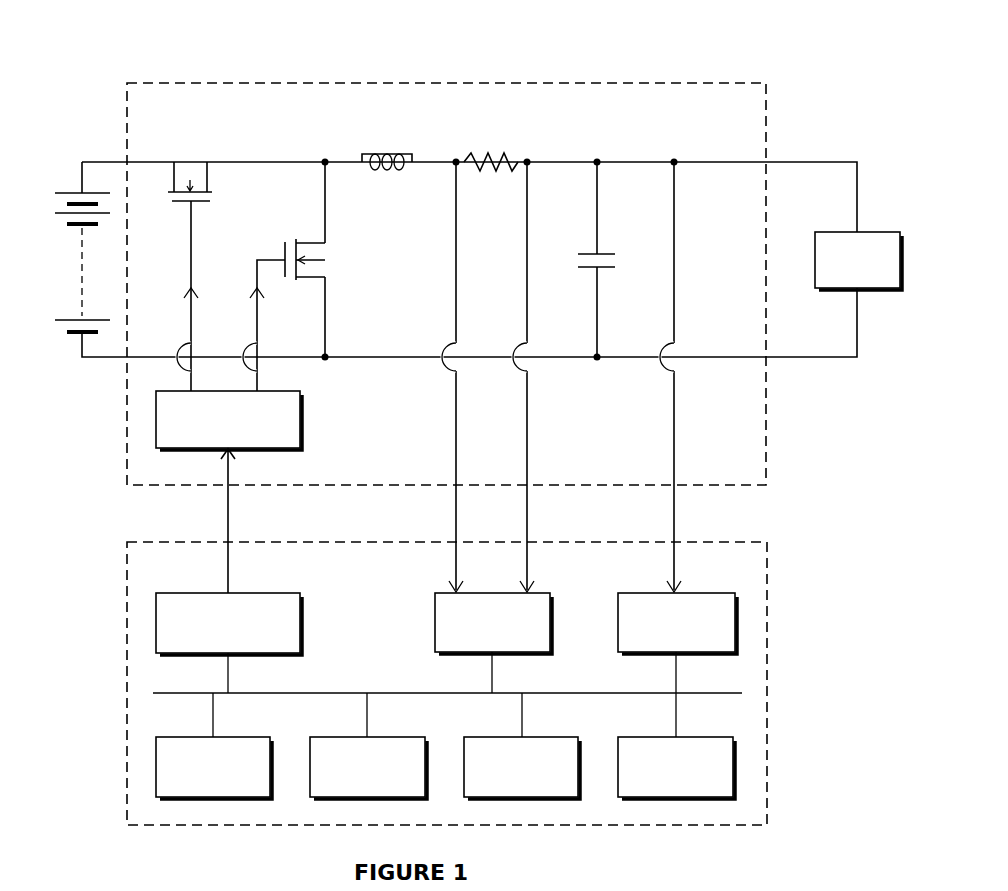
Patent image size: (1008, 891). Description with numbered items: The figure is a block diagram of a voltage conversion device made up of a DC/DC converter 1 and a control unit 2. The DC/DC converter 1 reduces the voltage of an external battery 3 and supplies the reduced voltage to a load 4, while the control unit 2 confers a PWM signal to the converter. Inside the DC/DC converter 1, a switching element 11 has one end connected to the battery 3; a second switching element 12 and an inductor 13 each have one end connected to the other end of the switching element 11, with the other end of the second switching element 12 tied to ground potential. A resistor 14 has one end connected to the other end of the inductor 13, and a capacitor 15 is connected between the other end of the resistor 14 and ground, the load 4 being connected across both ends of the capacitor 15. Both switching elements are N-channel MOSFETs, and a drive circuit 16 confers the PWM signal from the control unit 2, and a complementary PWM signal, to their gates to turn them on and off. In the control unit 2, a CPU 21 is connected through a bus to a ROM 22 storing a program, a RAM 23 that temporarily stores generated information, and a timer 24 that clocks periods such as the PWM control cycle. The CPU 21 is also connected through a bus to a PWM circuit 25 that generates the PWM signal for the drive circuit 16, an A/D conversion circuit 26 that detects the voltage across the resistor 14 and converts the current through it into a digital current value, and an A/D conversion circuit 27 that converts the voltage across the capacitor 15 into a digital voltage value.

The DC/DC converter 1 is at (728, 84).
The control unit 2 is at (728, 543).
The battery 3 is at (70, 256).
The load 4 is at (880, 230).
The switching element 11 is at (181, 160).
The second switching element 12 is at (336, 252).
The inductor 13 is at (393, 150).
The resistor 14 is at (496, 152).
The capacitor 15 is at (607, 250).
The drive circuit 16 is at (302, 415).
The CPU 21 is at (228, 737).
The ROM 22 is at (382, 737).
The RAM 23 is at (548, 737).
The timer 24 is at (690, 737).
The PWM circuit 25 is at (262, 593).
The A/D conversion circuit 26 is at (434, 622).
The A/D conversion circuit 27 is at (700, 592).